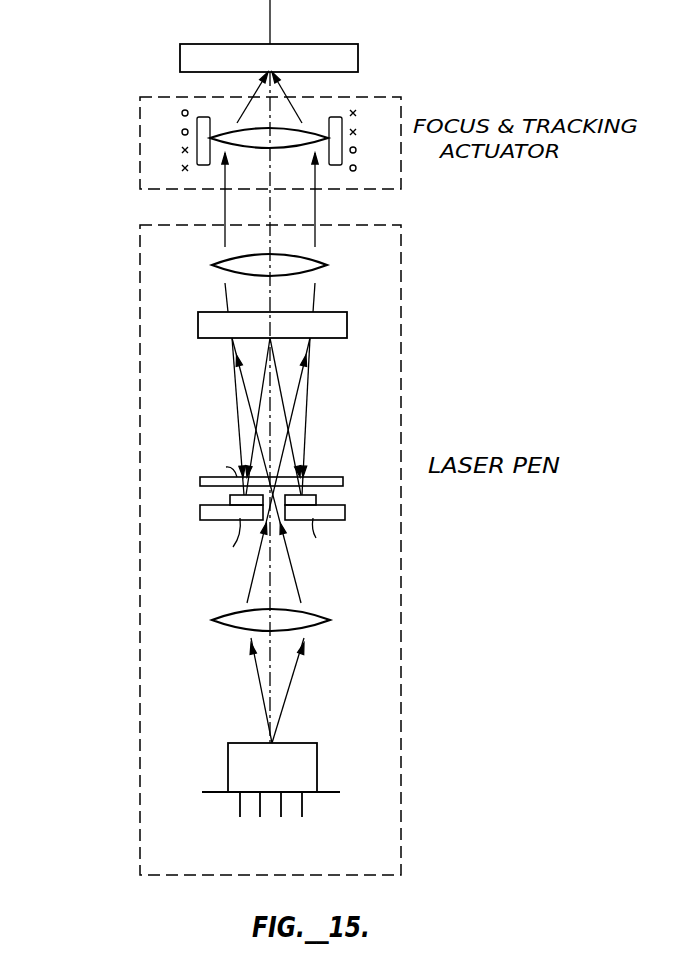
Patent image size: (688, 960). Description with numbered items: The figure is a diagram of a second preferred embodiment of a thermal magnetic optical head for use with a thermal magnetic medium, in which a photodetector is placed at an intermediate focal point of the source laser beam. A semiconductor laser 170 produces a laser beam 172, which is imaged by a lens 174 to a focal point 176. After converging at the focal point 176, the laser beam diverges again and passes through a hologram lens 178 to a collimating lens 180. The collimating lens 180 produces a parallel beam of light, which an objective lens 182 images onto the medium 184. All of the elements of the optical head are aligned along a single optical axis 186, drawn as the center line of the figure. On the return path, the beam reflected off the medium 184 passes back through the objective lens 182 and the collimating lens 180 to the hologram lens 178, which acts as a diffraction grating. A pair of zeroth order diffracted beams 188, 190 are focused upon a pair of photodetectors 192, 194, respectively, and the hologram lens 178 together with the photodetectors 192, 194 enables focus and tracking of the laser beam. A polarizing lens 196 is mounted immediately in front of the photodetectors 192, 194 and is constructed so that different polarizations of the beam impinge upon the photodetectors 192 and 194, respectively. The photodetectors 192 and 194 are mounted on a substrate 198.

The semiconductor laser 170 is at (317, 752).
The laser beam 172 is at (295, 676).
The lens 174 is at (320, 613).
The focal point 176 is at (268, 513).
The hologram lens 178 is at (337, 312).
The collimating lens 180 is at (323, 260).
The objective lens 182 is at (317, 130).
The medium 184 is at (330, 44).
The optical axis 186 is at (272, 380).
The 0th order diffracted beam 188 is at (309, 401).
The 0th order diffracted beam 190 is at (236, 402).
The photodetector 192 is at (316, 498).
The photodetector 194 is at (230, 500).
The polarizing lens 196 is at (343, 478).
The substrate 198 is at (337, 520).